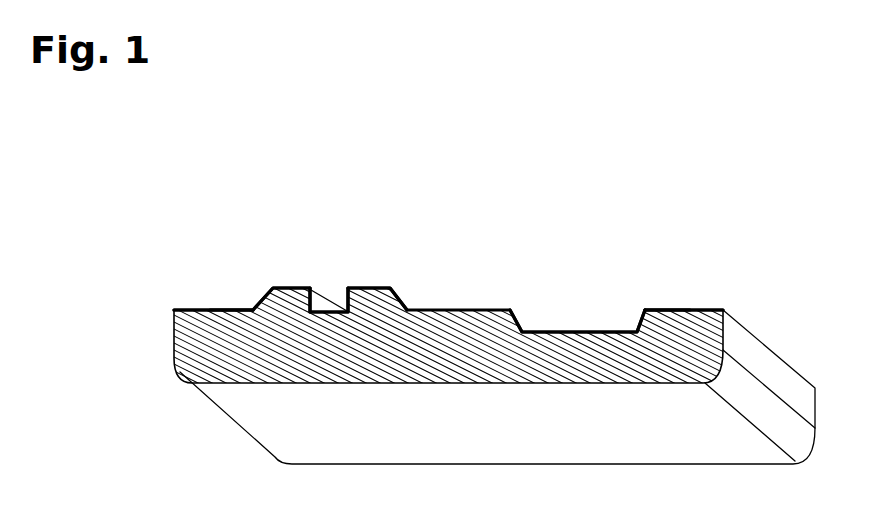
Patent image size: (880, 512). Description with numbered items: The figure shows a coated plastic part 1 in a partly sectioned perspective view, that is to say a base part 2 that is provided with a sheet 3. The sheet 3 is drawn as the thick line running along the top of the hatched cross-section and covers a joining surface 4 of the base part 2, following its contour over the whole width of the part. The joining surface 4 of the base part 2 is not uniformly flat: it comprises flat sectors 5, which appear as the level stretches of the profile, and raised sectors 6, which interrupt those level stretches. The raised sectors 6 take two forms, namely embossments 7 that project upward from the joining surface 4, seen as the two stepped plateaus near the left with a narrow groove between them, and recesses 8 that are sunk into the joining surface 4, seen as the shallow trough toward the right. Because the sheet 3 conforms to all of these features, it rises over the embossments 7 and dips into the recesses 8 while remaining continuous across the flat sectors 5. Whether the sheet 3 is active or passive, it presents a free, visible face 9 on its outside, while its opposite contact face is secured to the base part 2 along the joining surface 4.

The coated plastic part 1 is at (138, 445).
The base part 2 is at (160, 373).
The sheet 3 is at (191, 310).
The joining surface 4 is at (236, 307).
The flat sectors 5 is at (277, 286).
The raised sectors 6 is at (467, 228).
The embossments 7 is at (318, 282).
The recesses 8 is at (579, 323).
The free, visible face 9 is at (379, 283).